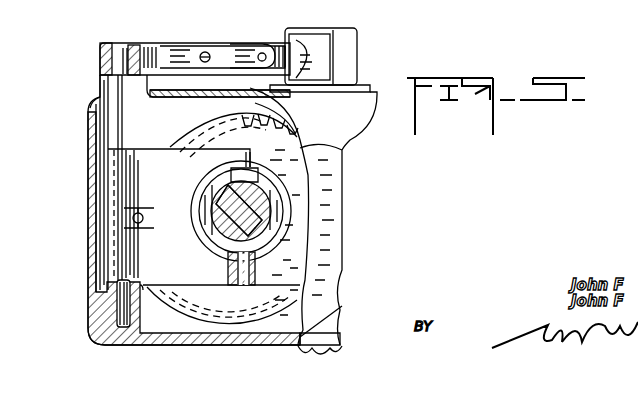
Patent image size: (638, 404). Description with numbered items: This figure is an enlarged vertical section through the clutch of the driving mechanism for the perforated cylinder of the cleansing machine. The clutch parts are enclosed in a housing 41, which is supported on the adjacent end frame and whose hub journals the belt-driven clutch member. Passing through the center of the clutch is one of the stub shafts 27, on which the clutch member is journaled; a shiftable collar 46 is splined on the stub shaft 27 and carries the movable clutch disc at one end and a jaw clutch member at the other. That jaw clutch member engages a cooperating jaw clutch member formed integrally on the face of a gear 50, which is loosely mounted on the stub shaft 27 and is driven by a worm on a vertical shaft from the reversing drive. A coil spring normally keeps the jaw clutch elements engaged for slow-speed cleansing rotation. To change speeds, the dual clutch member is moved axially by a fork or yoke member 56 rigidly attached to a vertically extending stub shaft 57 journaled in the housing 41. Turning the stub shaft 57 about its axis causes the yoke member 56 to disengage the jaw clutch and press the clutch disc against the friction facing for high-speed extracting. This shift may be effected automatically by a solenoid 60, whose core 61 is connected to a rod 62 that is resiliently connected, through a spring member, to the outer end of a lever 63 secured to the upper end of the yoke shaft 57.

The stub shaft 27 is at (265, 219).
The housing 41 is at (90, 243).
The shiftable collar 46 is at (268, 200).
The gear 50 is at (348, 150).
The yoke member 56 is at (166, 163).
The stub shaft 57 is at (117, 115).
The solenoid 60 is at (310, 32).
The core 61 is at (273, 44).
The rod 62 is at (212, 50).
The lever 63 is at (178, 50).